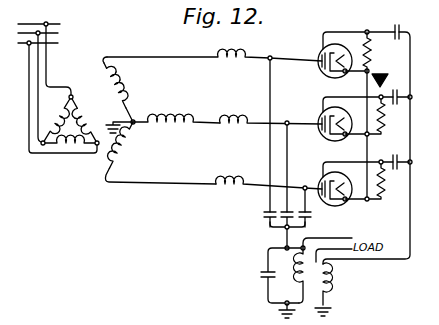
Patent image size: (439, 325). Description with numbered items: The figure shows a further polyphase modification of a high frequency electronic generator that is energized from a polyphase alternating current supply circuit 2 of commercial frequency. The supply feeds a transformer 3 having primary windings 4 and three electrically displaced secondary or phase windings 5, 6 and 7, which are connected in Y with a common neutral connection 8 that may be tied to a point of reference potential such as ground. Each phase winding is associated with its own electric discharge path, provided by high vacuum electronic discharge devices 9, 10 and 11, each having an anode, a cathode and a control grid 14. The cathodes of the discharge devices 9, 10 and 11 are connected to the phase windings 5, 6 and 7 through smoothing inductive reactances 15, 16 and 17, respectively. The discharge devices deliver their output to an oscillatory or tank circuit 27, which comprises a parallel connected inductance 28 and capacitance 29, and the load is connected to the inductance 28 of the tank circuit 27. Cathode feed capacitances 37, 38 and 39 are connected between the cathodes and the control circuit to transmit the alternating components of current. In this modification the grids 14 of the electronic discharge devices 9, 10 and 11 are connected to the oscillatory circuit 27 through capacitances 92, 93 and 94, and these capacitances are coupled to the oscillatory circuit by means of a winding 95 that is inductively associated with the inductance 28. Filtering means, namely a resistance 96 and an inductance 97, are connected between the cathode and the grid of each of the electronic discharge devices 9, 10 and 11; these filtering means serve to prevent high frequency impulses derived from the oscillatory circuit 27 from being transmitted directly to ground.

The polyphase alternating current supply circuit 2 is at (60, 27).
The transformer 3 is at (103, 106).
The primary windings 4 is at (70, 121).
The secondary or phase winding 5 is at (122, 81).
The secondary or phase winding 6 is at (166, 116).
The secondary or phase winding 7 is at (121, 160).
The neutral connection 8 is at (135, 125).
The electronic discharge device 9 is at (320, 70).
The electronic discharge device 10 is at (320, 117).
The electronic discharge device 11 is at (320, 181).
The control grid 14 is at (322, 48).
The smoothing inductive reactance 15 is at (231, 64).
The smoothing inductive reactance 16 is at (231, 129).
The smoothing inductive reactance 17 is at (226, 192).
The oscillatory or tank circuit 27 is at (243, 291).
The inductance 28 is at (296, 272).
The capacitance 29 is at (265, 272).
The cathode feed capacitance 37 is at (284, 223).
The cathode feed capacitance 38 is at (272, 215).
The cathode feed capacitance 39 is at (308, 215).
The capacitance 92 is at (399, 28).
The capacitance 93 is at (406, 93).
The capacitance 94 is at (406, 157).
The winding 95 is at (333, 279).
The resistance 96 is at (372, 62).
The inductance 97 is at (365, 44).